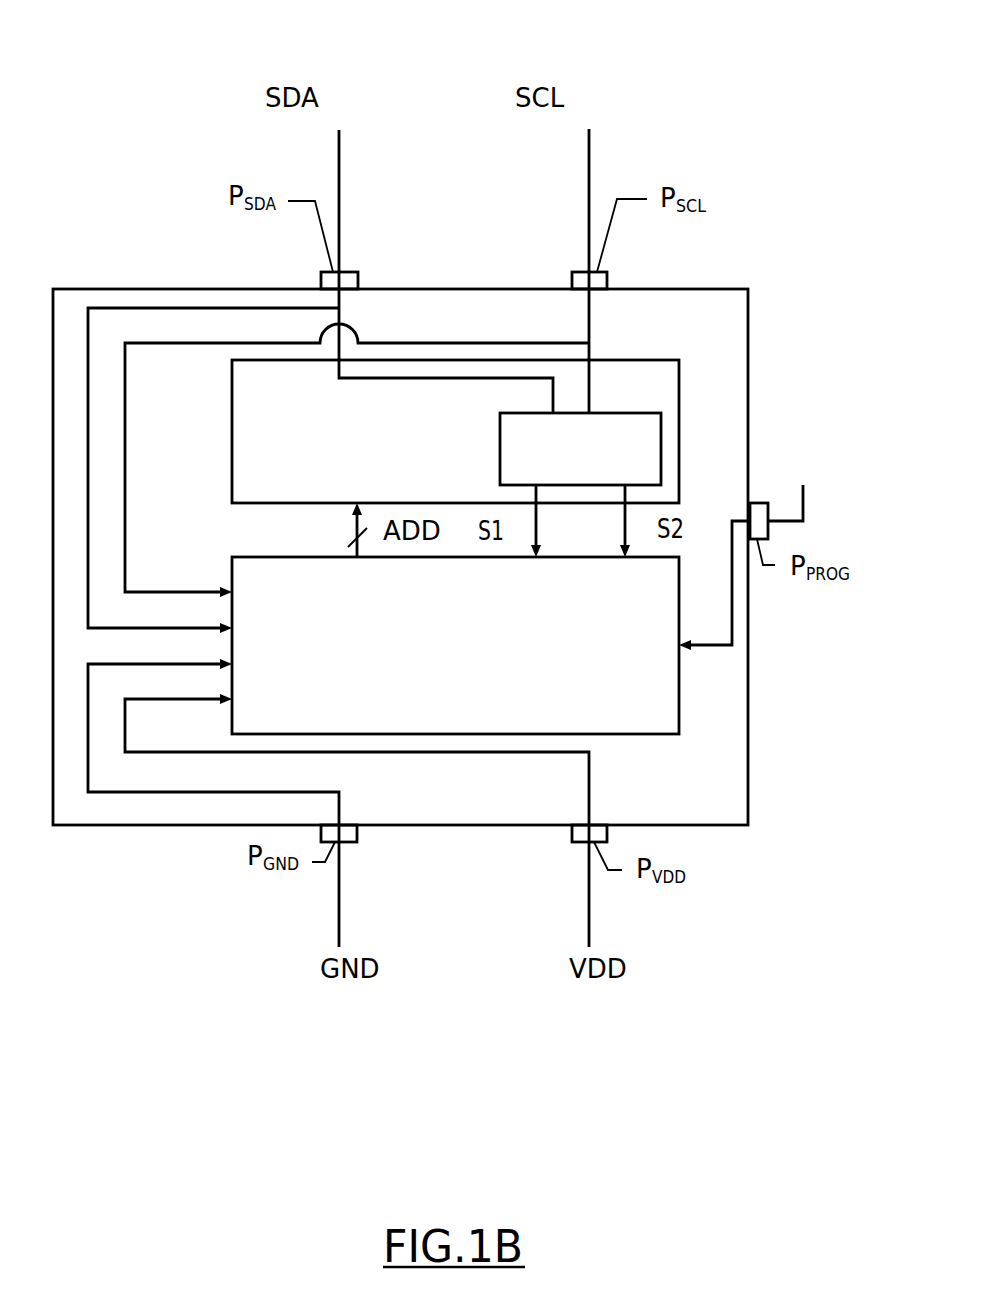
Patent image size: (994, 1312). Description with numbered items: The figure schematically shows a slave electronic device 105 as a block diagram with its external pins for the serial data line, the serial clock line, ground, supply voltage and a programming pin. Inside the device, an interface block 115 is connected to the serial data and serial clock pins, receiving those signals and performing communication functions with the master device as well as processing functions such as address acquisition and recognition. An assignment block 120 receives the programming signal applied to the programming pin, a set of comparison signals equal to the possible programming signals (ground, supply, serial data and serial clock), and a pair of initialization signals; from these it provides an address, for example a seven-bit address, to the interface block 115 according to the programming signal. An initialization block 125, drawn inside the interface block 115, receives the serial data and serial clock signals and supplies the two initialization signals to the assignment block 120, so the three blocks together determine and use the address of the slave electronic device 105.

The slave electronic device 105 is at (704, 38).
The interface block 115 is at (654, 358).
The assignment block 120 is at (504, 664).
The initialization block 125 is at (604, 461).